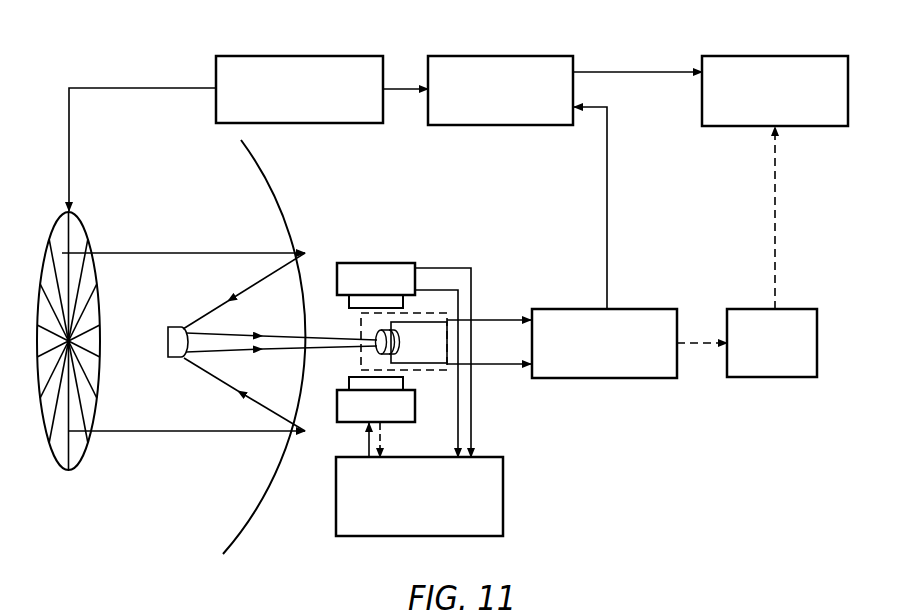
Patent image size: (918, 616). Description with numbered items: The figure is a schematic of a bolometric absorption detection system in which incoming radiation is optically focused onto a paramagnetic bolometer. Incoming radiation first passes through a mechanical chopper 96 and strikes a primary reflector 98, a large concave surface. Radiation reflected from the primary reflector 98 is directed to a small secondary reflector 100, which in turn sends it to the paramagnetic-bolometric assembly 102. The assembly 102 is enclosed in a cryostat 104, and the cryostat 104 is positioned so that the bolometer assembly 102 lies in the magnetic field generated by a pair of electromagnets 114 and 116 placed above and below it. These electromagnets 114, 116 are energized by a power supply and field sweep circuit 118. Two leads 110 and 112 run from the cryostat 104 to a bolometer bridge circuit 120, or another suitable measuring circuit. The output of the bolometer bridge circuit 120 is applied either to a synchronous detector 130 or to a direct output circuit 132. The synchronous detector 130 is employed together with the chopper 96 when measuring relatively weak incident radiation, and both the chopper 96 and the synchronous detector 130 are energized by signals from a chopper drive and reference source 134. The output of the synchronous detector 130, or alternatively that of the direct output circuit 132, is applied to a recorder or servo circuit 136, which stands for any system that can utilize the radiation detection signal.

The mechanical chopper 96 is at (87, 235).
The primary reflector 98 is at (285, 195).
The secondary reflector 100 is at (173, 358).
The paramagnetic-bolometric assembly 102 is at (398, 352).
The cryostat 104 is at (433, 371).
The lead 110 is at (493, 319).
The lead 112 is at (493, 366).
The electromagnet 114 is at (365, 262).
The electromagnet 116 is at (397, 423).
The power supply and field sweep circuit 118 is at (503, 495).
The bolometer bridge circuit 120 is at (608, 380).
The synchronous detector 130 is at (491, 55).
The direct output circuit 132 is at (775, 380).
The chopper drive and reference source 134 is at (301, 55).
The recorder or servo circuit 136 is at (768, 55).